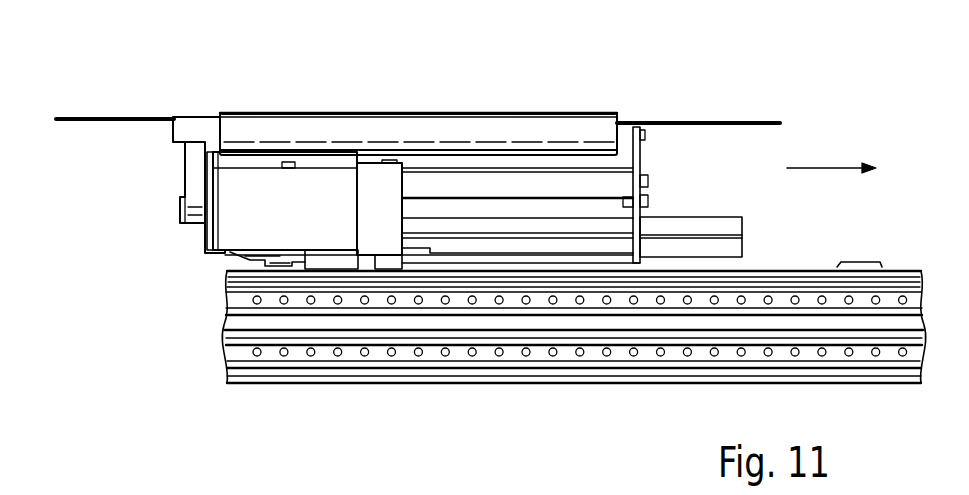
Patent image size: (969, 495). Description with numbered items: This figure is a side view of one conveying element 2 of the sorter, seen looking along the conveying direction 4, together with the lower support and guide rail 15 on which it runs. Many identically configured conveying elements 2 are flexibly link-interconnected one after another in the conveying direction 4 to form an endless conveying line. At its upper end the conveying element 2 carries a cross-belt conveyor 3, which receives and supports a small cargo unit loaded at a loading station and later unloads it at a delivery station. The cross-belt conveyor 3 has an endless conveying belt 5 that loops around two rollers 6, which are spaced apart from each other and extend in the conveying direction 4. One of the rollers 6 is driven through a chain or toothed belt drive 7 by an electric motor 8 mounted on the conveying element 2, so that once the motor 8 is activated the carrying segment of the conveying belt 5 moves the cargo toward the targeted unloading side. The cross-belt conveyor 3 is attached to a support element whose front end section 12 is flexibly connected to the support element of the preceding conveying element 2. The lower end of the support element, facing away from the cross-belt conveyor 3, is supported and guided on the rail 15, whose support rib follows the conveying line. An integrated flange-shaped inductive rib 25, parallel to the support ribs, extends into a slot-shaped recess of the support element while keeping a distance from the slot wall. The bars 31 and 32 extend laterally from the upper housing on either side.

The conveying element 2 is at (602, 104).
The cross-belt conveyor 3 is at (565, 113).
The conveying direction 4 is at (831, 154).
The conveying belt 5 is at (515, 125).
The roller 6 is at (462, 122).
The chain or toothed belt drive 7 is at (195, 178).
The electric motor 8 is at (320, 185).
The front end section 12 is at (882, 265).
The support and guide rail 15 is at (572, 374).
The inductive rib 25 is at (718, 236).
The right bar 31 is at (727, 121).
The left bar 32 is at (96, 117).